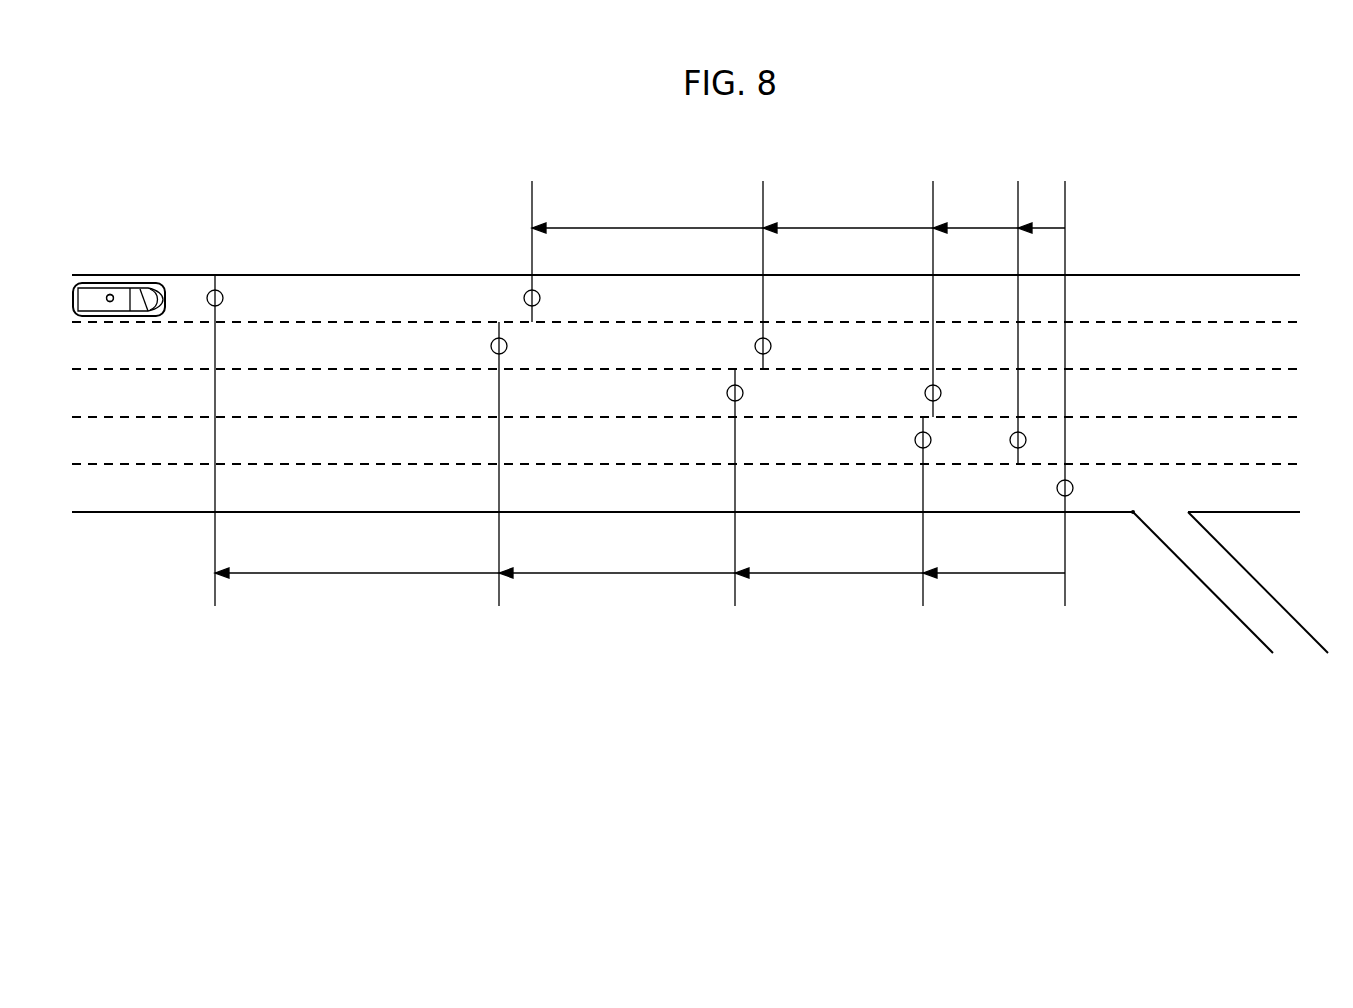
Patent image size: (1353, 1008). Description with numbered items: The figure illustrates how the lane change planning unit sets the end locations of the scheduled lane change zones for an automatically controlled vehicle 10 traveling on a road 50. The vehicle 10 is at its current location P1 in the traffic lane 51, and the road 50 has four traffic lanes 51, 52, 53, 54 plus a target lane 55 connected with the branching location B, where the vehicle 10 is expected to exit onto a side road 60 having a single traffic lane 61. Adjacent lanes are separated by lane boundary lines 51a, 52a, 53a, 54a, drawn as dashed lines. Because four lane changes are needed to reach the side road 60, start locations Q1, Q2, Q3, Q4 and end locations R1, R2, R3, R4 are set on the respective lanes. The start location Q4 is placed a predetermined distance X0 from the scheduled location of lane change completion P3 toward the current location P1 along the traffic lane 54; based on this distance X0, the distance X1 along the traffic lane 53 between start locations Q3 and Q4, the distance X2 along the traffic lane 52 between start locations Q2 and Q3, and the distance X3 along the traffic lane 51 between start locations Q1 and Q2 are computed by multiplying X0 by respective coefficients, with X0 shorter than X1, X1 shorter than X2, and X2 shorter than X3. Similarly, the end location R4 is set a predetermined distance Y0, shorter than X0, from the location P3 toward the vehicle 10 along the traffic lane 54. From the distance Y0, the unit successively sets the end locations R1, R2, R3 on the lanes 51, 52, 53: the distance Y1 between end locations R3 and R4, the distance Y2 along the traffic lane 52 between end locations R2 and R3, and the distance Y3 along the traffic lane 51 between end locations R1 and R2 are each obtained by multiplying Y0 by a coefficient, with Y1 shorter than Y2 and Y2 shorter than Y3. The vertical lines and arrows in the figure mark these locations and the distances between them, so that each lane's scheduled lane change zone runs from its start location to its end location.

The vehicle 10 is at (93, 284).
The road 50 is at (1139, 273).
The traffic lane 51 is at (1245, 308).
The traffic lane 52 is at (1245, 355).
The traffic lane 53 is at (1245, 403).
The traffic lane 54 is at (1245, 450).
The target lane 55 is at (1245, 498).
The lane boundary line 51a is at (1278, 322).
The lane boundary line 52a is at (1278, 369).
The lane boundary line 53a is at (1278, 417).
The lane boundary line 54a is at (1278, 464).
The side road 60 is at (1191, 577).
The traffic lane 61 is at (1290, 635).
The branching location B is at (1131, 516).
The current location P1 is at (110, 294).
The scheduled location of lane change completion P3 is at (1073, 483).
The start location Q1 is at (235, 440).
The start location Q2 is at (477, 464).
The start location Q3 is at (711, 487).
The start location Q4 is at (899, 511).
The end location R1 is at (510, 251).
The end location R2 is at (741, 275).
The end location R3 is at (910, 299).
The end location R4 is at (996, 322).
The distance X0 is at (994, 585).
The distance X1 is at (829, 585).
The distance X2 is at (617, 585).
The distance X3 is at (357, 585).
The distance Y0 is at (1041, 216).
The distance Y1 is at (975, 216).
The distance Y2 is at (848, 216).
The distance Y3 is at (647, 216).